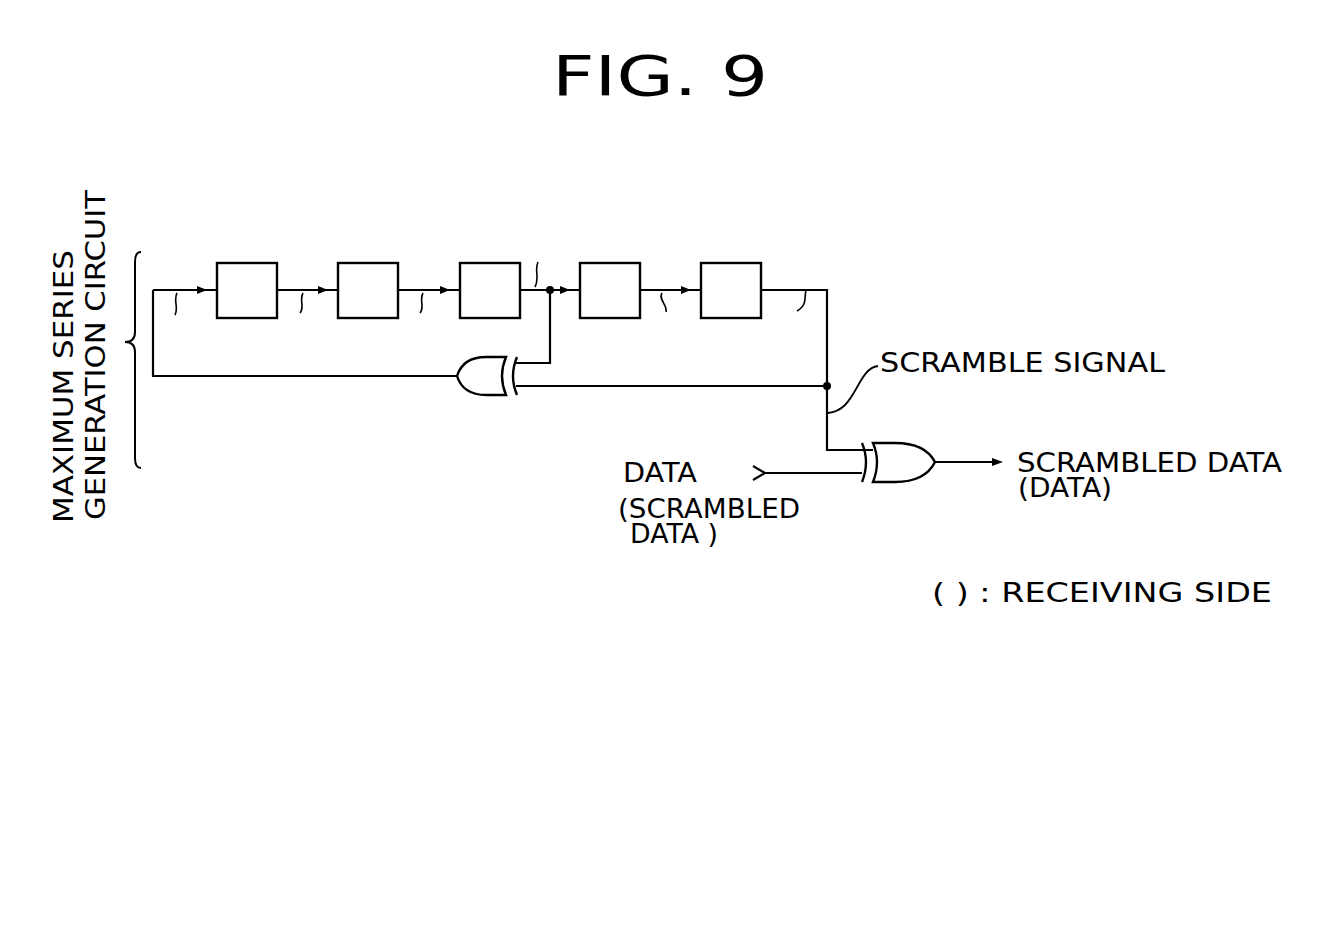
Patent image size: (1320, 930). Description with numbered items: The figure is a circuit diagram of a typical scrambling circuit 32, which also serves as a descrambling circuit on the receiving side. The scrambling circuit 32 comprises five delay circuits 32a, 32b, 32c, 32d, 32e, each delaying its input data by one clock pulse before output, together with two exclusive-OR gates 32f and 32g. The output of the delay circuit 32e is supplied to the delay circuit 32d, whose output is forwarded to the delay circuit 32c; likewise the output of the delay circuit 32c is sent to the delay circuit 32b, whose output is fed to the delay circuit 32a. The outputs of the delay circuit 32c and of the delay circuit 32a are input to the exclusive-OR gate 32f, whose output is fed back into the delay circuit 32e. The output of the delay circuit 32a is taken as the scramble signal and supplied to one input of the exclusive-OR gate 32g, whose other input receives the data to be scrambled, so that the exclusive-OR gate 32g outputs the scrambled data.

The scrambling circuit 32 is at (845, 314).
The delay circuit 32a is at (732, 262).
The delay circuit 32b is at (609, 262).
The delay circuit 32c is at (488, 262).
The delay circuit 32d is at (364, 262).
The delay circuit 32e is at (243, 262).
The exclusive-OR gate 32f is at (482, 396).
The exclusive-OR gate 32g is at (913, 483).